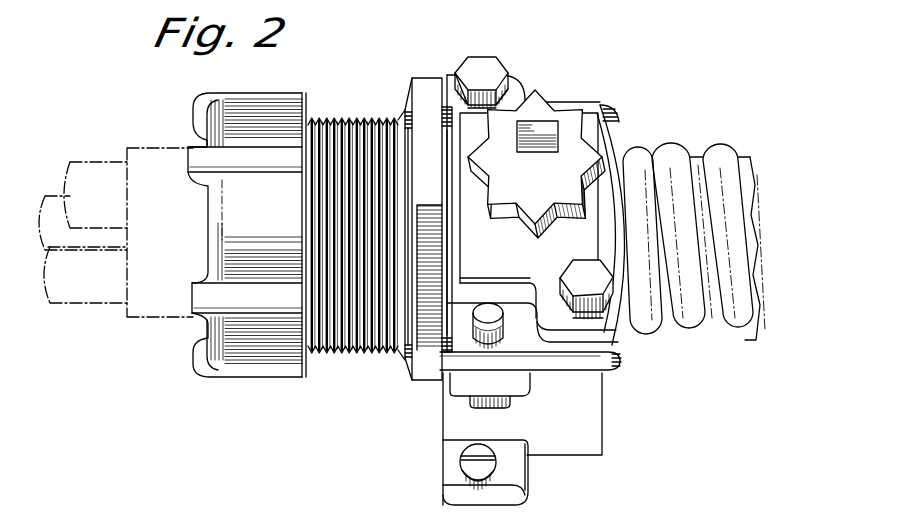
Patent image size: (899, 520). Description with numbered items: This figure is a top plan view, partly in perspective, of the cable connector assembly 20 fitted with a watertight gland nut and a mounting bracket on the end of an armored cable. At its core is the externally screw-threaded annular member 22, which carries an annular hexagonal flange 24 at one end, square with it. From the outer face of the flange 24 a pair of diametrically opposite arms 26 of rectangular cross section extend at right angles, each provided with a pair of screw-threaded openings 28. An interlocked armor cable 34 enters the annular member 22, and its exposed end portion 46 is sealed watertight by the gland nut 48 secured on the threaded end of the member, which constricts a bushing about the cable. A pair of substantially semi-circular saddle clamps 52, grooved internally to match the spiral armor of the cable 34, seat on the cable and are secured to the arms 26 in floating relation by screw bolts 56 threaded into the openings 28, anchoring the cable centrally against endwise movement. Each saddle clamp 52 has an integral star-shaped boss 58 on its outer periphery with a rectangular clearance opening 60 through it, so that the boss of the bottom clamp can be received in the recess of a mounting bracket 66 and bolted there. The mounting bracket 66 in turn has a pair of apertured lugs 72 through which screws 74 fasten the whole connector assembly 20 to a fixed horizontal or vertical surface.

The cable connector assembly 20 is at (393, 97).
The externally screw-threaded annular member 22 is at (360, 350).
The annular hexagonal flange 24 is at (428, 85).
The arms 26 is at (602, 372).
The screw-threaded openings 28 is at (476, 318).
The interlocked armor cable 34 is at (737, 332).
The exposed end portion 46 is at (141, 148).
The gland nut 48 is at (247, 360).
The saddle clamps 52 is at (600, 137).
The screw bolts 56 is at (483, 65).
The star-shaped boss 58 is at (566, 112).
The rectangular clearance opening 60 is at (537, 128).
The mounting bracket 66 is at (595, 430).
The apertured lugs 72 is at (512, 479).
The screws 74 is at (470, 464).